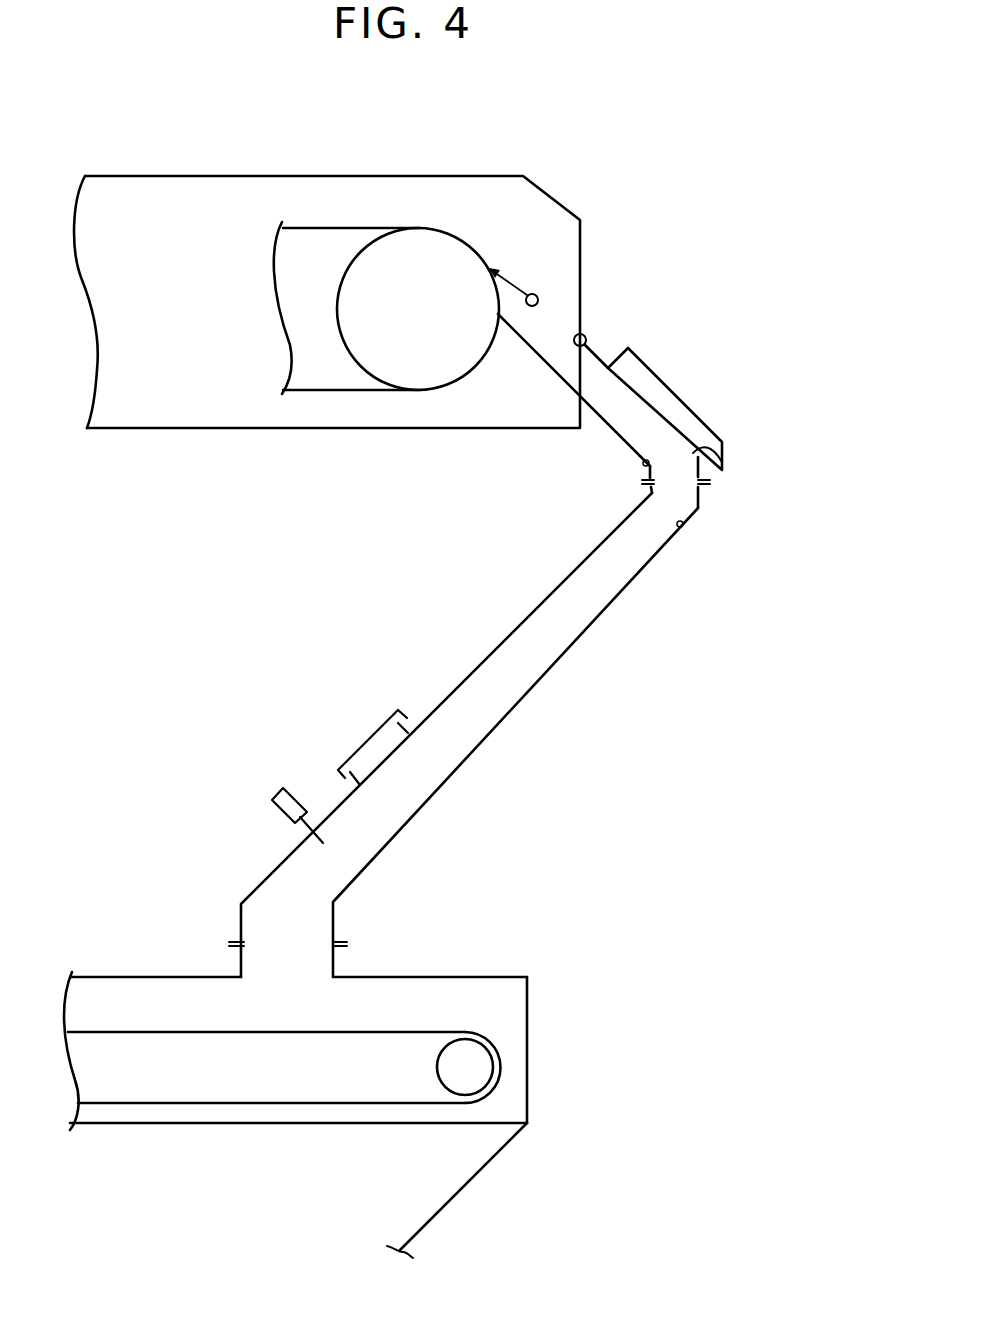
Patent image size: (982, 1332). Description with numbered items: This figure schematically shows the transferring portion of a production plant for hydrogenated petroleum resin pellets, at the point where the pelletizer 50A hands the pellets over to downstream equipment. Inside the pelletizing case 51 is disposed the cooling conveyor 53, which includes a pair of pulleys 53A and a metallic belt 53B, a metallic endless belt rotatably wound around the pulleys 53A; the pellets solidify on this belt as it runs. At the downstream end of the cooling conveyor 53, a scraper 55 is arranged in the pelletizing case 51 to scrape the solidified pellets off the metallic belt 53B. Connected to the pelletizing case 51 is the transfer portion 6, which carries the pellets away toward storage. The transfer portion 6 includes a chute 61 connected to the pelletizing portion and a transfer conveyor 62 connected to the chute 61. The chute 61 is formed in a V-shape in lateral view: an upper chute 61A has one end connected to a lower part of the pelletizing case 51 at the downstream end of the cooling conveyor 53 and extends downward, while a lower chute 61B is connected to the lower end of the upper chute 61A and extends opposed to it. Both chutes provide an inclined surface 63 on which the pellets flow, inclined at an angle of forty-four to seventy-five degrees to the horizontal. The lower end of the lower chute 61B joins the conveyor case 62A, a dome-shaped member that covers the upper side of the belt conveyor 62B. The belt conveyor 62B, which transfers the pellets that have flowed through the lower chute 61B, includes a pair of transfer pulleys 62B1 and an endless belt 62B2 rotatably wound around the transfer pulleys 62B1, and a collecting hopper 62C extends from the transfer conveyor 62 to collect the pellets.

The pelletizer 50A is at (400, 112).
The pelletizing case 51 is at (453, 177).
The cooling conveyor 53 is at (338, 390).
The pulleys 53A is at (382, 390).
The metallic belt 53B is at (300, 390).
The scraper 55 is at (531, 294).
The transfer portion 6 is at (690, 785).
The chute 61 is at (786, 465).
The upper chute 61A is at (720, 472).
The lower chute 61B is at (700, 510).
The inclined surface 63 is at (644, 467).
The transfer conveyor 62 is at (473, 977).
The conveyor case 62A is at (527, 998).
The belt conveyor 62B is at (223, 1105).
The transfer pulleys 62B1 is at (477, 1070).
The endless belt 62B2 is at (387, 1032).
The collecting hopper 62C is at (452, 1202).